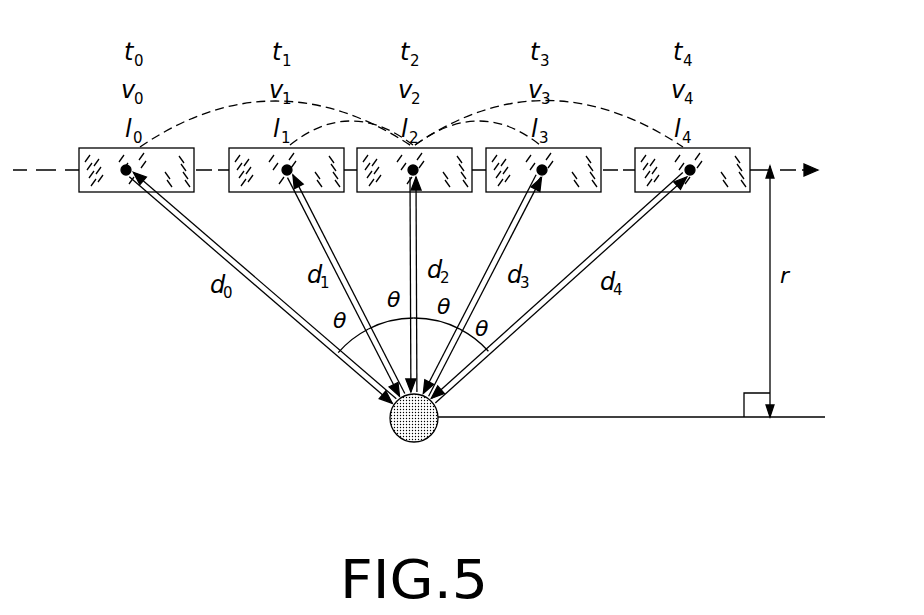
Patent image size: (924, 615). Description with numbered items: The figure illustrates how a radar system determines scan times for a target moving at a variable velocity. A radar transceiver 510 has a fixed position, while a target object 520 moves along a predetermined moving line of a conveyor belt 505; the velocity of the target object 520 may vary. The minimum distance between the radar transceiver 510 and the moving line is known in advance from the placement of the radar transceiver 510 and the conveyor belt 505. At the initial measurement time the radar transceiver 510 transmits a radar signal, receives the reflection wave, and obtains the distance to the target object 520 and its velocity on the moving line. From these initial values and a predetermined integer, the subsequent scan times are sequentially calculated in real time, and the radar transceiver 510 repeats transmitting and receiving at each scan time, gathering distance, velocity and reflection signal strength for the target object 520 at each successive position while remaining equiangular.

The conveyor belt 505 is at (47, 168).
The radar transceiver 510 is at (414, 478).
The target object 520 is at (725, 147).